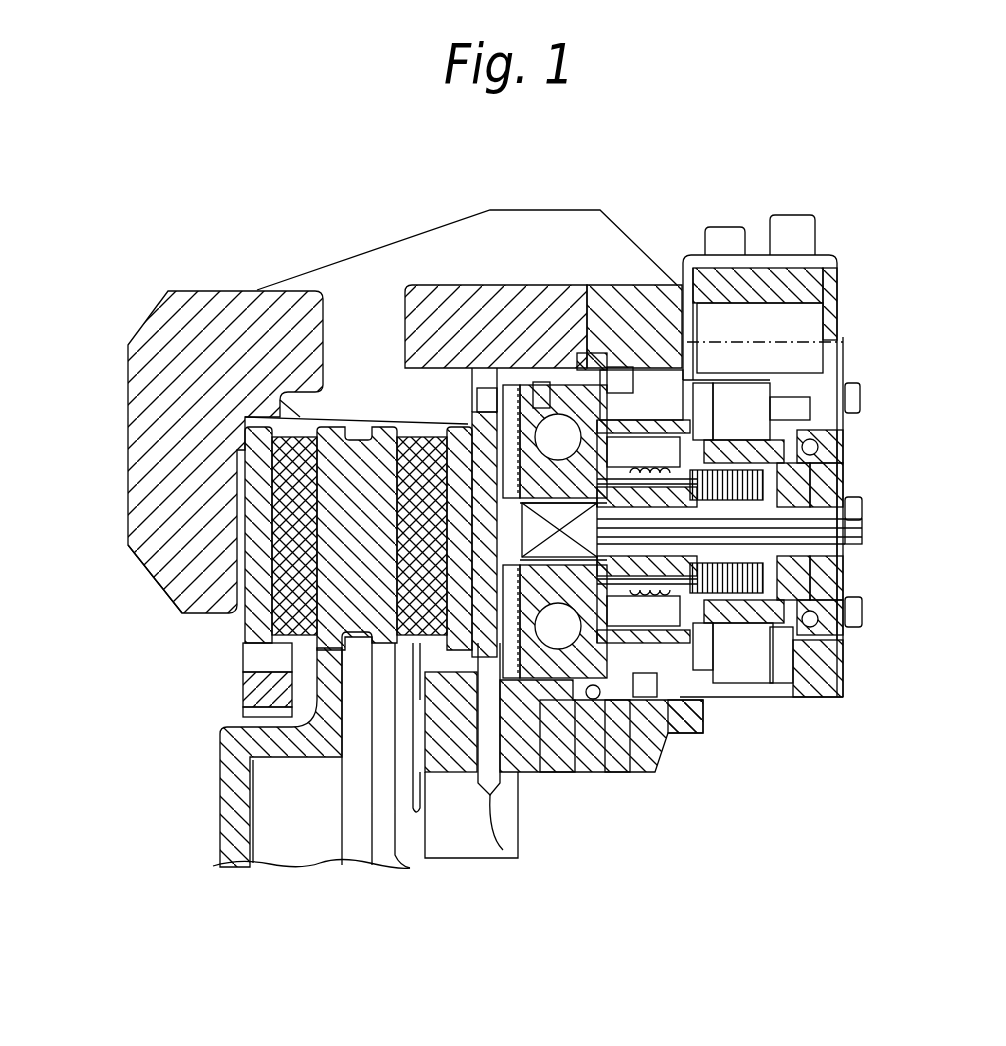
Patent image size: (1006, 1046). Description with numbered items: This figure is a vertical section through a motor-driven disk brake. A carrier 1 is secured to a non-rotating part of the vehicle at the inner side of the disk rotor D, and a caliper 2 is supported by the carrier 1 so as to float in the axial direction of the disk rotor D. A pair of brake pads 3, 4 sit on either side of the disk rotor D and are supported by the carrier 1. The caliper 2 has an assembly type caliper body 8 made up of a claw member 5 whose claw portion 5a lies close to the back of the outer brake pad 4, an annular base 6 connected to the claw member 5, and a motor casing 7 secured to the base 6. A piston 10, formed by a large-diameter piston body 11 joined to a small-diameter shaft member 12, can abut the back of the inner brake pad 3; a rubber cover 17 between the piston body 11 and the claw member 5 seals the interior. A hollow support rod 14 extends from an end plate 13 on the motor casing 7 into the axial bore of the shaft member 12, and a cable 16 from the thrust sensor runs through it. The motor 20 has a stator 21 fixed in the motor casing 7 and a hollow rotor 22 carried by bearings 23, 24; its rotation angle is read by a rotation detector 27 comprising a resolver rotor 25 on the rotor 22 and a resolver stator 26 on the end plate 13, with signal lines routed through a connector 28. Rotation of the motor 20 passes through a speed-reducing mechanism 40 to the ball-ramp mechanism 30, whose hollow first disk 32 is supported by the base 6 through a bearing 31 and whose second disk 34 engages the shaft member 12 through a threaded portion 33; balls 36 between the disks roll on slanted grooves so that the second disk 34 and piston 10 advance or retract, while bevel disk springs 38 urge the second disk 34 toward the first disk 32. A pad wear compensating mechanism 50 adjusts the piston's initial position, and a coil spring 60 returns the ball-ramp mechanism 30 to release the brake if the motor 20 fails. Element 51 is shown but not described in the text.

The carrier 1 is at (236, 694).
The caliper 2 is at (829, 243).
The inner brake pad 3 is at (243, 655).
The outer brake pad 4 is at (250, 457).
The claw member 5 is at (246, 317).
The claw portion 5a is at (163, 500).
The annular base 6 is at (653, 738).
The motor casing 7 is at (820, 697).
The caliper body 8 is at (340, 256).
The piston 10 is at (430, 550).
The piston body 11 is at (420, 638).
The shaft member 12 is at (540, 772).
The end plate 13 is at (860, 612).
The support rod 14 is at (860, 567).
The cable 16 is at (850, 533).
The rubber cover 17 is at (459, 543).
The motor 20 is at (822, 402).
The stator 21 is at (767, 397).
The rotor 22 is at (790, 437).
The bearing 23 is at (852, 630).
The bearing 24 is at (706, 733).
The resolver rotor 25 is at (853, 487).
The resolver stator 26 is at (850, 492).
The rotation detector 27 is at (940, 457).
The connector 28 is at (830, 280).
The ball-ramp mechanism 30 is at (555, 415).
The bearing 31 is at (566, 772).
The first disk 32 is at (592, 360).
The threaded portion 33 is at (616, 772).
The second disk 34 is at (415, 300).
The balls 36 is at (557, 385).
The bevel disk springs 38 is at (770, 690).
The speed-reducing mechanism 40 is at (638, 387).
The pad wear compensating mechanism 50 is at (747, 687).
The connector pin 51 is at (690, 453).
The coil spring 60 is at (668, 375).
The disk rotor D is at (280, 400).